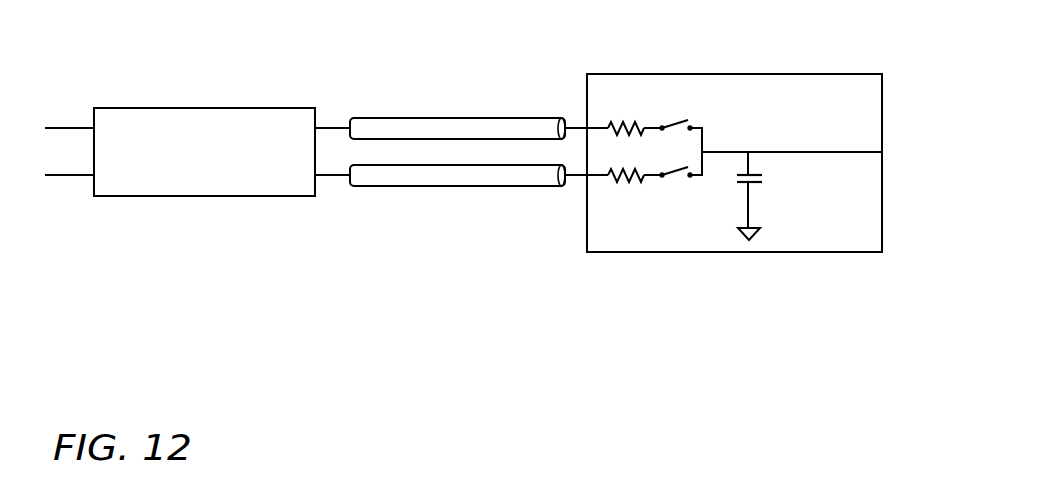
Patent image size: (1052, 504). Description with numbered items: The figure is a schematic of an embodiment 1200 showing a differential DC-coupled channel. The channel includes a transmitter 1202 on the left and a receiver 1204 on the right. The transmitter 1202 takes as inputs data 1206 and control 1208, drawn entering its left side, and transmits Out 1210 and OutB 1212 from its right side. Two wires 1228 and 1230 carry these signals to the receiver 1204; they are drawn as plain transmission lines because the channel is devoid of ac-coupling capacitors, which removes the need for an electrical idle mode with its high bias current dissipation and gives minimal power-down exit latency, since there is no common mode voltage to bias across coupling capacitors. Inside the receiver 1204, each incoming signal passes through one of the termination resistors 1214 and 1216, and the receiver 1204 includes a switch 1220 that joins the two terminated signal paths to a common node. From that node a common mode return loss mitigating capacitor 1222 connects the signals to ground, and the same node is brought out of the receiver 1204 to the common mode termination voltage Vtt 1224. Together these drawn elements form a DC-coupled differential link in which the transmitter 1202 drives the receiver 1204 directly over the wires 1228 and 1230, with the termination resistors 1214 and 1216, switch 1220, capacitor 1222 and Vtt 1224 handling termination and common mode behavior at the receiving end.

The embodiment 1200 is at (752, 282).
The transmitter 1202 is at (307, 102).
The receiver 1204 is at (808, 69).
The data 1206 is at (65, 112).
The control 1208 is at (65, 190).
The Out 1210 is at (331, 124).
The OutB 1212 is at (328, 183).
The termination resistor 1214 is at (703, 111).
The termination resistor 1216 is at (703, 214).
The switch 1220 is at (688, 122).
The common mode return loss mitigating capacitor 1222 is at (817, 217).
The common mode termination voltage Vtt 1224 is at (938, 192).
The wire 1228 is at (458, 117).
The wire 1230 is at (458, 190).